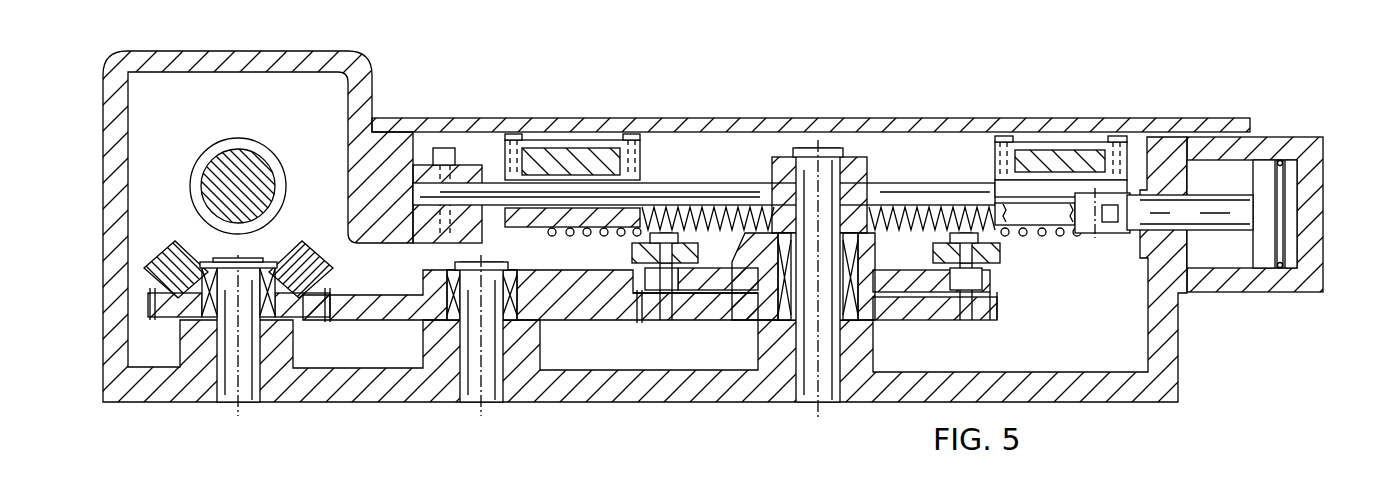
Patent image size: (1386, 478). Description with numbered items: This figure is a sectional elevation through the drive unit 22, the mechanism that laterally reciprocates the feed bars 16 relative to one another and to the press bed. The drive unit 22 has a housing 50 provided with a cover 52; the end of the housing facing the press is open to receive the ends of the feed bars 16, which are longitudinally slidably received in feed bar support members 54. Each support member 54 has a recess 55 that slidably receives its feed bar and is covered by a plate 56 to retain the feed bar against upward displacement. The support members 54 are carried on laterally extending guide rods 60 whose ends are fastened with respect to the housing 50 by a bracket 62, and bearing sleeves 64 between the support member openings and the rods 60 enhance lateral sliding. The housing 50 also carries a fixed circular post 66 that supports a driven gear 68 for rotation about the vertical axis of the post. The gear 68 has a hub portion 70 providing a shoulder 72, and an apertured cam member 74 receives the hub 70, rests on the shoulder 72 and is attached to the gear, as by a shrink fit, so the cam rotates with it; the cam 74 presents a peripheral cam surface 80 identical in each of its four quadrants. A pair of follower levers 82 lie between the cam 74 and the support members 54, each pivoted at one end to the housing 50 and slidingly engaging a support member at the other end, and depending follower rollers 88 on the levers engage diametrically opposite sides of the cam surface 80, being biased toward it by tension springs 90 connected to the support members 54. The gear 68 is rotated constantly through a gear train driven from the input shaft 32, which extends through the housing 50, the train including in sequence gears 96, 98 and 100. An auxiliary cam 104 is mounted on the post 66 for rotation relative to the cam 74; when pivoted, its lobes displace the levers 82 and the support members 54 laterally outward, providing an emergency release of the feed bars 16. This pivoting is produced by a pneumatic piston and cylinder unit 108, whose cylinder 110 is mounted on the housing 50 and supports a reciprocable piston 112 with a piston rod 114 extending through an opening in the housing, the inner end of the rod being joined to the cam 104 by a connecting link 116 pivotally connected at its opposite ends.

The drive unit 22 is at (874, 45).
The input shaft 32 is at (258, 165).
The housing 50 is at (1172, 362).
The cover 52 is at (946, 118).
The feed bar support member 54 is at (640, 160).
The recess 55 is at (513, 140).
The feed bar 16 is at (565, 148).
The plate 56 is at (598, 140).
The guide rod 60 is at (714, 185).
The bracket 62 is at (470, 165).
The bearing sleeve 64 is at (530, 228).
The circular post 66 is at (828, 410).
The driven gear 68 is at (955, 316).
The hub portion 70 is at (768, 270).
The shoulder 72 is at (745, 292).
The cam member 74 is at (720, 302).
The peripheral cam surface 80 is at (668, 292).
The follower lever 82 is at (632, 254).
The follower roller 88 is at (645, 280).
The tension spring 90 is at (905, 205).
The gear 96 is at (298, 252).
The gear 98 is at (305, 318).
The gear 100 is at (372, 312).
The auxiliary cam 104 is at (776, 160).
The pneumatic piston and cylinder unit 108 is at (1297, 118).
The cylinder 110 is at (1290, 285).
The piston 112 is at (1264, 158).
The piston rod 114 is at (1213, 222).
The connecting link 116 is at (1062, 215).